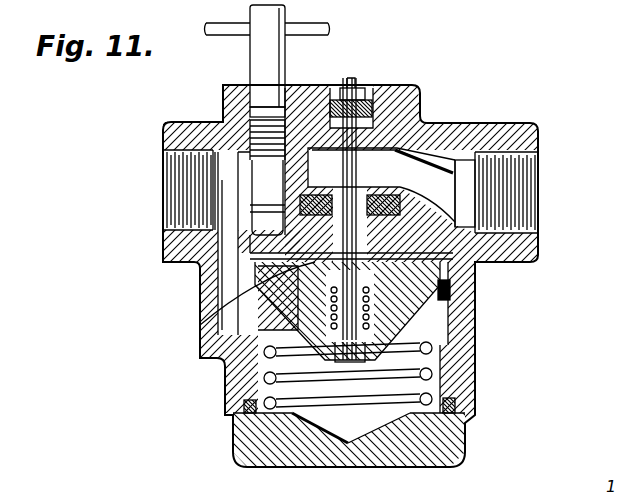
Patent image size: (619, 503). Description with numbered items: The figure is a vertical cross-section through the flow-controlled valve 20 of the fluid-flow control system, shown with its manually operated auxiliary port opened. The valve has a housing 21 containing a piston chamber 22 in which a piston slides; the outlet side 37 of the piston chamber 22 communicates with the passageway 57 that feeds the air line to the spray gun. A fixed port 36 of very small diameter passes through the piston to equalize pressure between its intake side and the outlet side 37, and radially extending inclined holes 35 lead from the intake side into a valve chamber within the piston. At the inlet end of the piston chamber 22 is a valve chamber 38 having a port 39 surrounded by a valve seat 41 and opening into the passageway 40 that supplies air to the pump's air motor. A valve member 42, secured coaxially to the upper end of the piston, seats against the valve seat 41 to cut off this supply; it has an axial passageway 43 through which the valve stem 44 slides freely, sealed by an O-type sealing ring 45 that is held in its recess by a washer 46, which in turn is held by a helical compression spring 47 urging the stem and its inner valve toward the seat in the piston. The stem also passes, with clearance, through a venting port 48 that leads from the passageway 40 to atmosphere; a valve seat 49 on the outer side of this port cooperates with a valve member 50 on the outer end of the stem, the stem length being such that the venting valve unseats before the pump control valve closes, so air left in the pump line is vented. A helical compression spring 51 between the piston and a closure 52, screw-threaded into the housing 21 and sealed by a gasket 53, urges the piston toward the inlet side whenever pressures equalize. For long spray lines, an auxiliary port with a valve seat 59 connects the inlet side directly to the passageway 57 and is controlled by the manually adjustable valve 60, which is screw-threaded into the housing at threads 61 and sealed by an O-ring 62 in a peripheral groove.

The flow-controlled valve 20 is at (517, 45).
The housing 21 is at (472, 268).
The piston chamber 22 is at (464, 326).
The radially-extending inclined holes 35 is at (258, 312).
The fixed port 36 is at (466, 341).
The outlet side of the piston chamber 37 is at (240, 425).
The valve chamber 38 is at (378, 236).
The port 39 is at (512, 122).
The passageway 40 is at (445, 140).
The valve seat 41 is at (412, 170).
The valve member 42 is at (255, 290).
The axial passageway 43 is at (450, 285).
The valve stem 44 is at (412, 168).
The O-type sealing ring 45 is at (258, 343).
The washer 46 is at (247, 370).
The helical compression spring 47 is at (233, 400).
The venting port 48 is at (424, 107).
The valve seat 49 is at (380, 122).
The valve member 50 is at (372, 100).
The helical compression spring 51 is at (318, 446).
The closure 52 is at (388, 446).
The gasket 53 is at (466, 418).
The passageway 57 is at (228, 213).
The valve seat 59 is at (247, 258).
The manually adjustable valve 60 is at (262, 52).
The screw threads 61 is at (248, 138).
The O-ring 62 is at (295, 86).